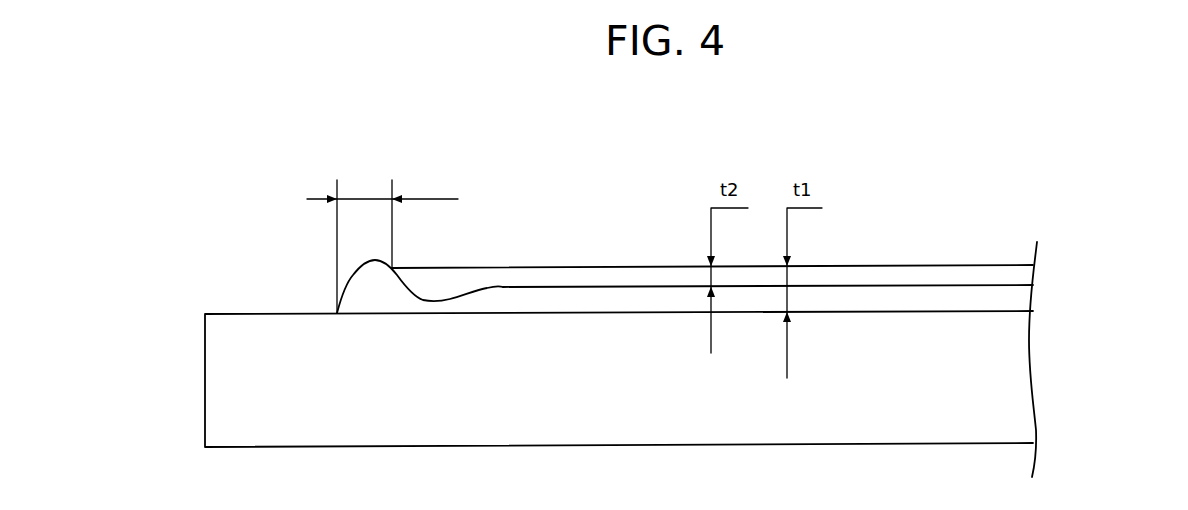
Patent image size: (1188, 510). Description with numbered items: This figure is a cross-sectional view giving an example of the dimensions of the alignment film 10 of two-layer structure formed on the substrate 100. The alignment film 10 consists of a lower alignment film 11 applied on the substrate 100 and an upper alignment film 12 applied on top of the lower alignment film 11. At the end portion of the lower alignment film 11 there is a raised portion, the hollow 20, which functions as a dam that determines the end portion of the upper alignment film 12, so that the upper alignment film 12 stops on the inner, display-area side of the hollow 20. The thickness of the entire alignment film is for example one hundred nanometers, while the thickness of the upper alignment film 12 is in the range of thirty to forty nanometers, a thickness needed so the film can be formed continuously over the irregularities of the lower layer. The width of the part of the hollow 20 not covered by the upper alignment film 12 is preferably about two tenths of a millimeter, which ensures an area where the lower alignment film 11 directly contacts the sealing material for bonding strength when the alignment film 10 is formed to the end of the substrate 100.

The substrate 100 is at (223, 406).
The alignment film 10 is at (767, 298).
The upper alignment film 12 is at (1022, 273).
The lower alignment film 11 is at (795, 307).
The hollow 20 is at (352, 271).